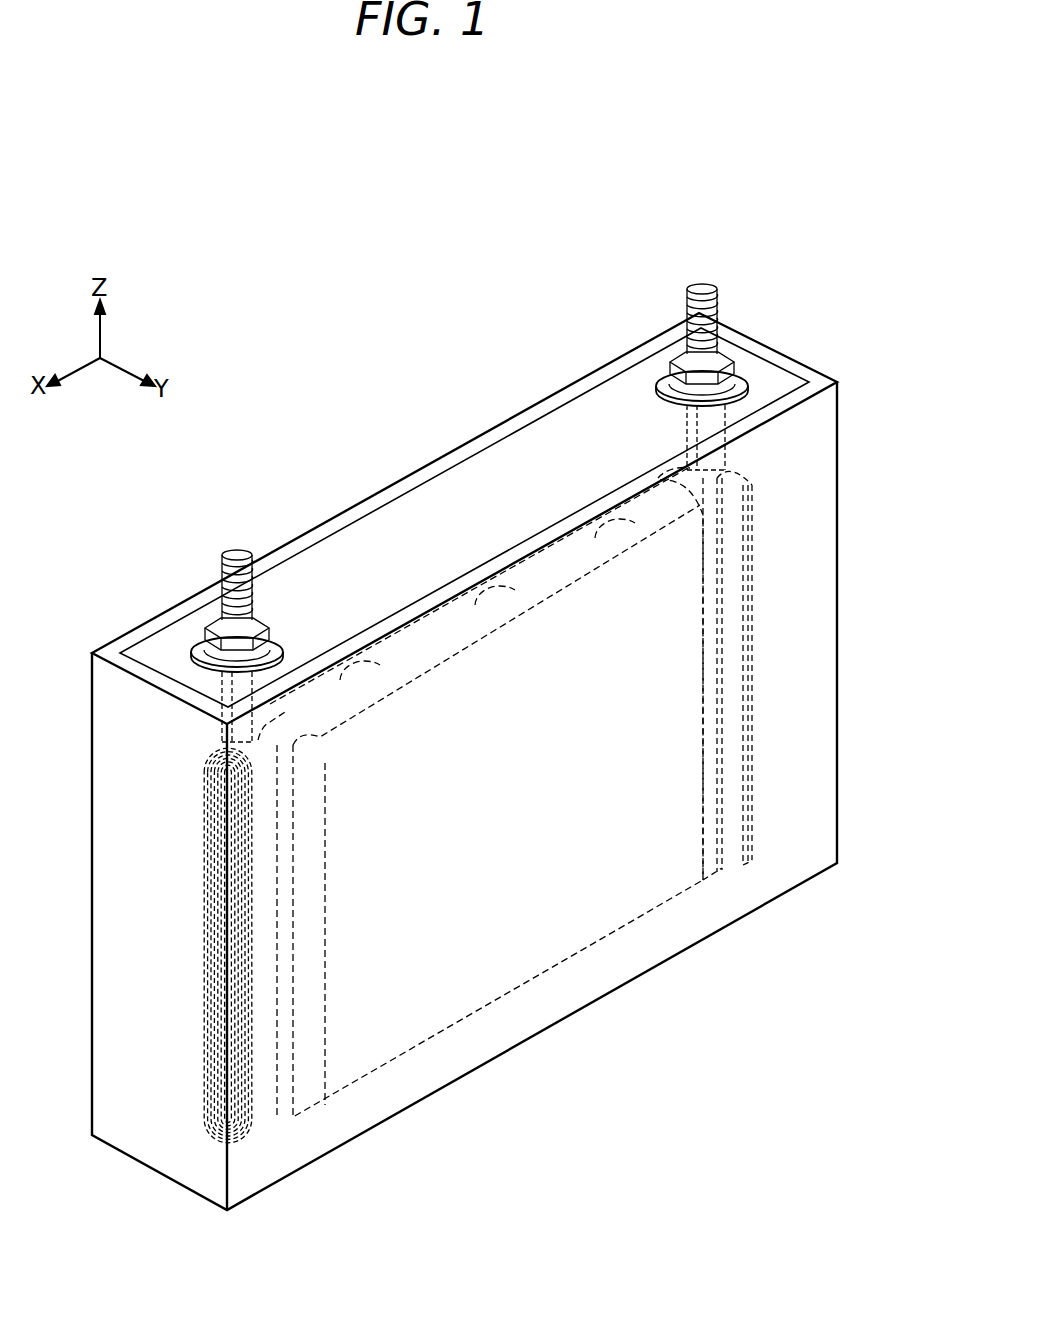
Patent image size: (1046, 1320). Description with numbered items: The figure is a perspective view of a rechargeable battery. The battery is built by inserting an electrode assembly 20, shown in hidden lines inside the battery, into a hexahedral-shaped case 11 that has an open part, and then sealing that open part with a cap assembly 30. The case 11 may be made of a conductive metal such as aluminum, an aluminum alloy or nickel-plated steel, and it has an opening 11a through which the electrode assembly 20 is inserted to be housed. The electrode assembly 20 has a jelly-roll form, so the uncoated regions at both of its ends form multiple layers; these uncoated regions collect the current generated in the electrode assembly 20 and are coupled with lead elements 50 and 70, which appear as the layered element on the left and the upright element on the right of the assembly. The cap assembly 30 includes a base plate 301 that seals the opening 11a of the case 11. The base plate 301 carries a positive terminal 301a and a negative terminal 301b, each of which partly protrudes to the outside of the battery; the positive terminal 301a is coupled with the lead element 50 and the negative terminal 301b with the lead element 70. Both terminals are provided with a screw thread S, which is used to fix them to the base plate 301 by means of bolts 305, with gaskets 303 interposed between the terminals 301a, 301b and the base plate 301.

The case 11 is at (838, 462).
The opening 11a is at (588, 382).
The electrode assembly 20 is at (605, 932).
The cap assembly 30 is at (488, 460).
The base plate 301 is at (458, 489).
The positive terminal 301a is at (237, 548).
The negative terminal 301b is at (700, 283).
The gasket 303 is at (283, 642).
The bolt 305 is at (205, 617).
The lead element 50 is at (263, 1048).
The lead element 70 is at (738, 740).
The screw thread S is at (255, 600).